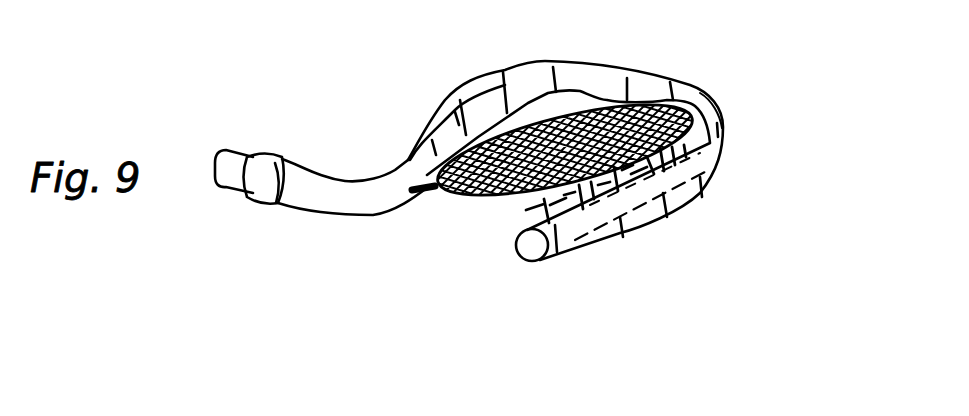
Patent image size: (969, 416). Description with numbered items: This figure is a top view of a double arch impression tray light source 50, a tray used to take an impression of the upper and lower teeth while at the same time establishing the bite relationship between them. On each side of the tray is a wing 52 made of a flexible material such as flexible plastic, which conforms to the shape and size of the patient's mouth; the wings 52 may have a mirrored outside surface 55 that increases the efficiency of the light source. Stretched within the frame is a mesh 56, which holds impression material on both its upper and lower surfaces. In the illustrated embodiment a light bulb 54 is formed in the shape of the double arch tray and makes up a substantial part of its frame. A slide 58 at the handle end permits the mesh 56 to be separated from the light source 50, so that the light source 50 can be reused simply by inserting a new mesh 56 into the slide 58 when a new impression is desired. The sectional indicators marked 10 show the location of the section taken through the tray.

The section line indicator 10 is at (456, 7).
The double arch impression tray light source 50 is at (450, 276).
The wing 52 is at (508, 70).
The light bulb 54 is at (724, 118).
The mirrored outside surface 55 is at (428, 124).
The mesh 56 is at (517, 200).
The slide 58 is at (416, 197).